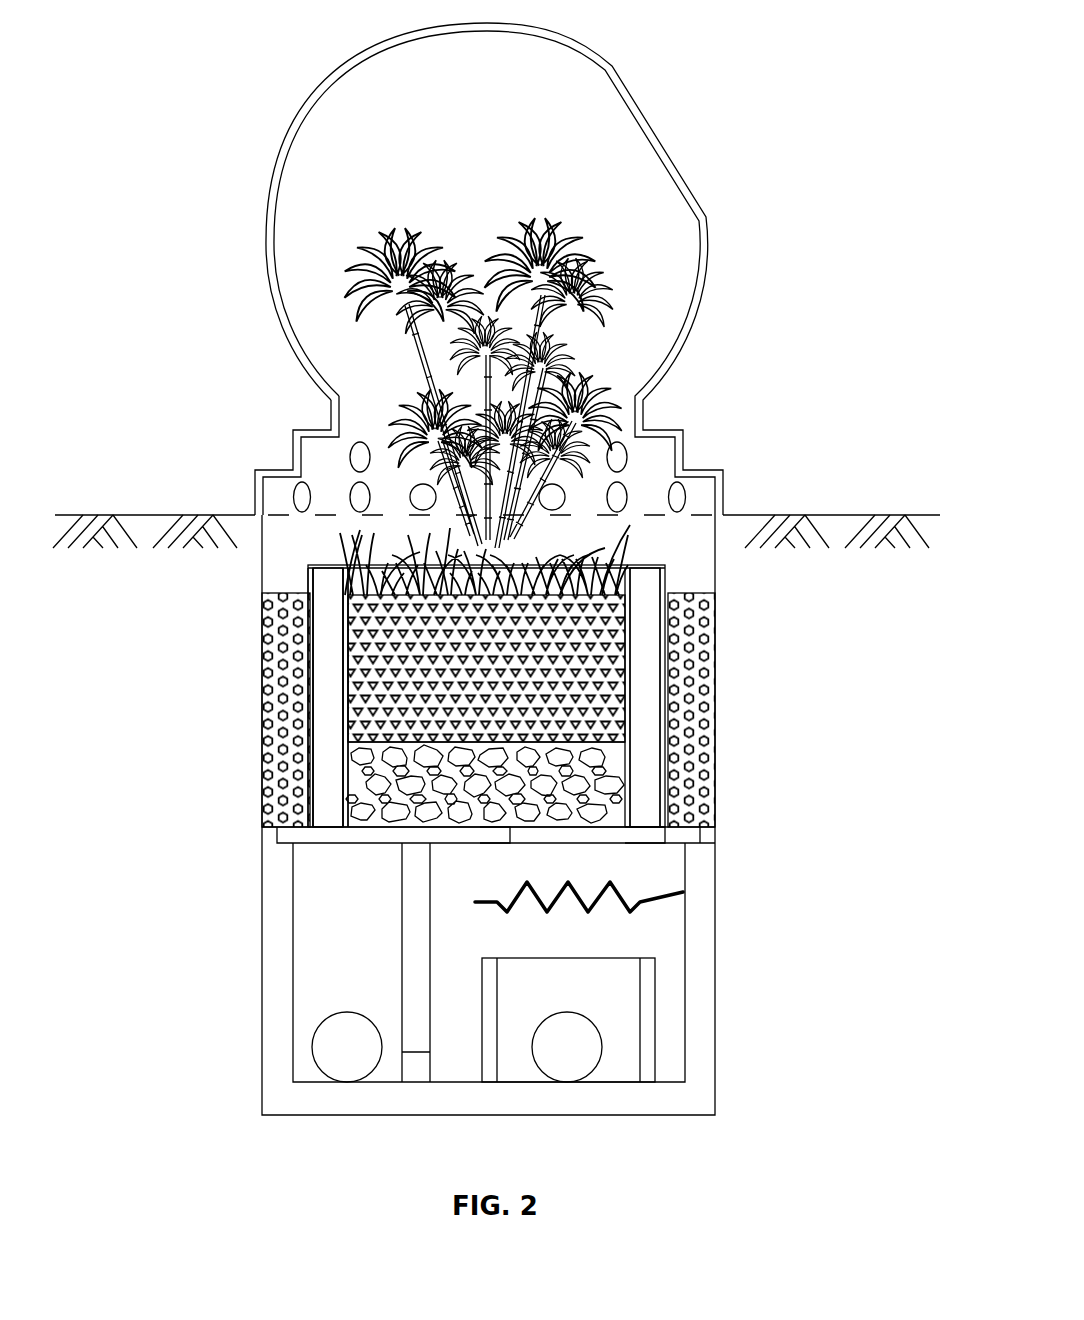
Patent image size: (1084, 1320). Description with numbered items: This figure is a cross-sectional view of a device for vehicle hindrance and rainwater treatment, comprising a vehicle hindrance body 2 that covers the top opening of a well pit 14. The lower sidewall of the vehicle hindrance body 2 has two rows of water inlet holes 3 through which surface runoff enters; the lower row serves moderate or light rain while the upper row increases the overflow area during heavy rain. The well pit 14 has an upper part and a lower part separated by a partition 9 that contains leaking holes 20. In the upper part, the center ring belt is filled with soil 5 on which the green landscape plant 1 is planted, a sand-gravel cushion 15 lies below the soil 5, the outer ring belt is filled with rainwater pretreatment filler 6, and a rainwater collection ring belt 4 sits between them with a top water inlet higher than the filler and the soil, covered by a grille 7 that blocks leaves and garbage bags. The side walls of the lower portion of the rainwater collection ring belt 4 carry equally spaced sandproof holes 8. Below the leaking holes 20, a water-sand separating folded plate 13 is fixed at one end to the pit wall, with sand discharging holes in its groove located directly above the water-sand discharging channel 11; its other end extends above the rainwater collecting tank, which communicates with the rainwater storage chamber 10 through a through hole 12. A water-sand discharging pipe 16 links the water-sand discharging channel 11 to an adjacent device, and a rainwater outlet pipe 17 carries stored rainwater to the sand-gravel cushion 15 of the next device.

The green landscape plant 1 is at (442, 267).
The vehicle hindrance body 2 is at (708, 216).
The water inlet hole 3 is at (683, 495).
The rainwater collection ring belt 4 is at (642, 652).
The soil 5 is at (425, 695).
The rainwater pretreatment filler 6 is at (712, 697).
The grille 7 is at (345, 565).
The sandproof hole 8 is at (663, 808).
The partition 9 is at (495, 835).
The rainwater storage chamber 10 is at (353, 997).
The water-sand discharging channel 11 is at (622, 1028).
The through hole 12 is at (413, 1077).
The water-sand separating folded plate 13 is at (553, 912).
The well pit 14 is at (260, 825).
The sand-gravel cushion 15 is at (345, 735).
The water-sand discharging pipe 16 is at (568, 1080).
The rainwater outlet pipe 17 is at (312, 1047).
The leaking hole 20 is at (640, 833).